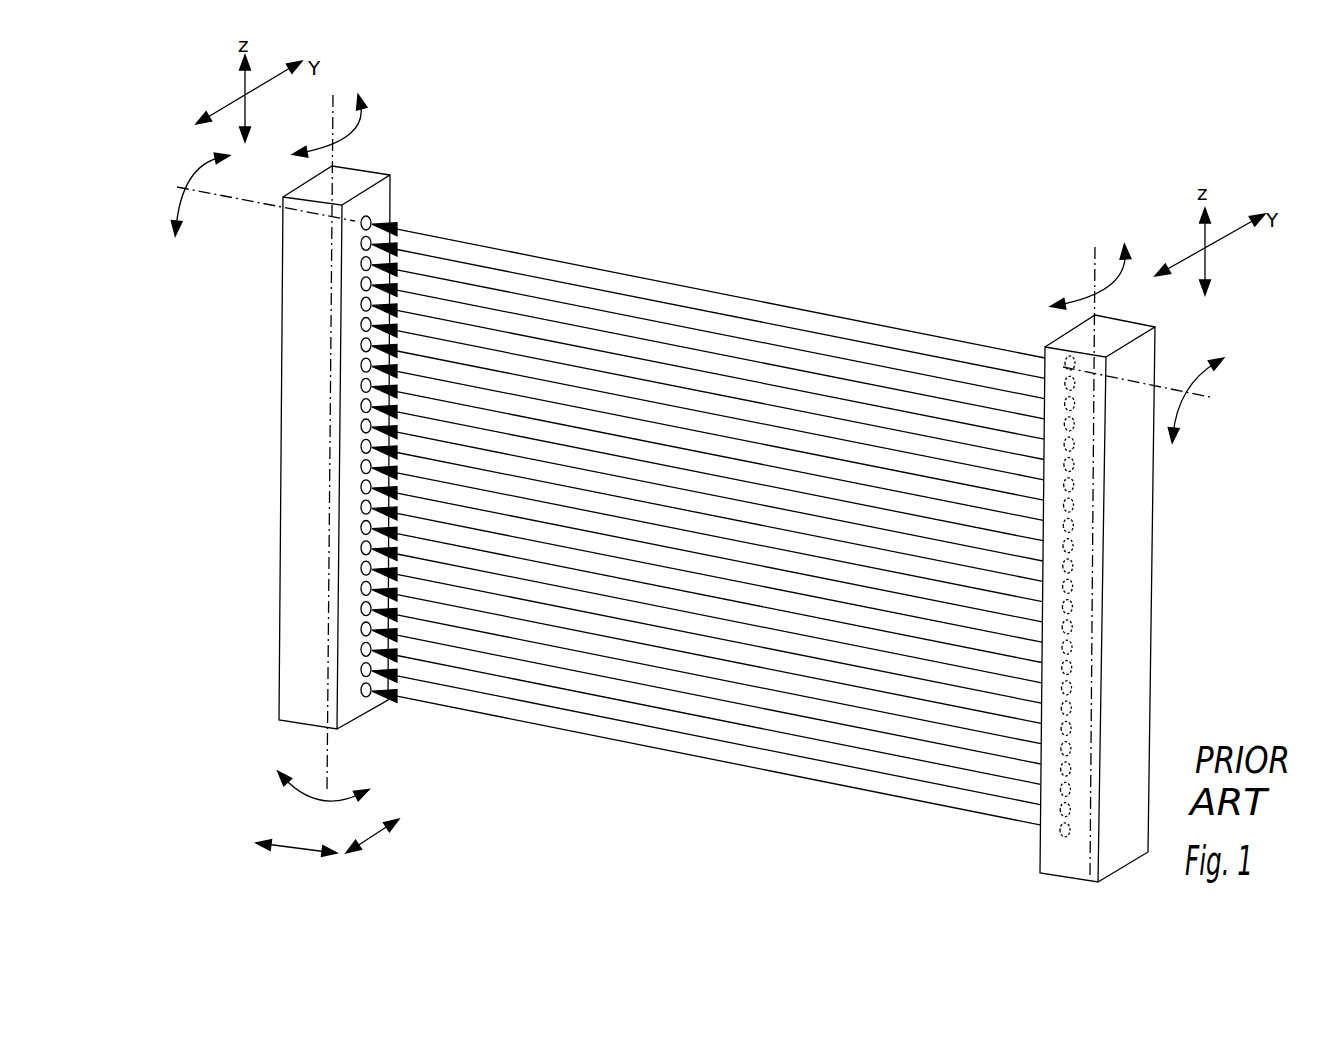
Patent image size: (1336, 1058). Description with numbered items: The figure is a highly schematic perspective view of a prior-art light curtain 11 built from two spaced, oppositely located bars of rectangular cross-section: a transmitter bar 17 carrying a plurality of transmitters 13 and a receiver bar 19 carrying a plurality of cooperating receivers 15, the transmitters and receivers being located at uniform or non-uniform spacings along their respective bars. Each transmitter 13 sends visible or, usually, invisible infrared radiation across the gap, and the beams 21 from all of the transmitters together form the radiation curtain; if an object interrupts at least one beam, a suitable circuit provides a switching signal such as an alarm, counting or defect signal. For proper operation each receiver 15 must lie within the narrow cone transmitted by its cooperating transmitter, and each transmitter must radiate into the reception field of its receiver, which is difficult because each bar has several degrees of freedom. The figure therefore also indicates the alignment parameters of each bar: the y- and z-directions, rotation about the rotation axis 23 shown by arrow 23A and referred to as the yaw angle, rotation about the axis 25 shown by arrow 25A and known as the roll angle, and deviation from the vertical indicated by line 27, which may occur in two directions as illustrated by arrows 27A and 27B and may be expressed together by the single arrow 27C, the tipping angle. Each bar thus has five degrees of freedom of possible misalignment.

The light curtain 11 is at (858, 284).
The transmitters 13 is at (1074, 547).
The receivers 15 is at (361, 406).
The transmitter bar 17 is at (1143, 573).
The receiver bar 19 is at (288, 492).
The beams 21 is at (673, 753).
The rotation axis 23 is at (335, 97).
The arrow 23A is at (353, 137).
The axis 25 is at (240, 200).
The arrow 25A is at (193, 178).
The line 27 is at (327, 779).
The arrow 27A is at (302, 853).
The arrow 27B is at (372, 837).
The arrow 27C is at (317, 802).